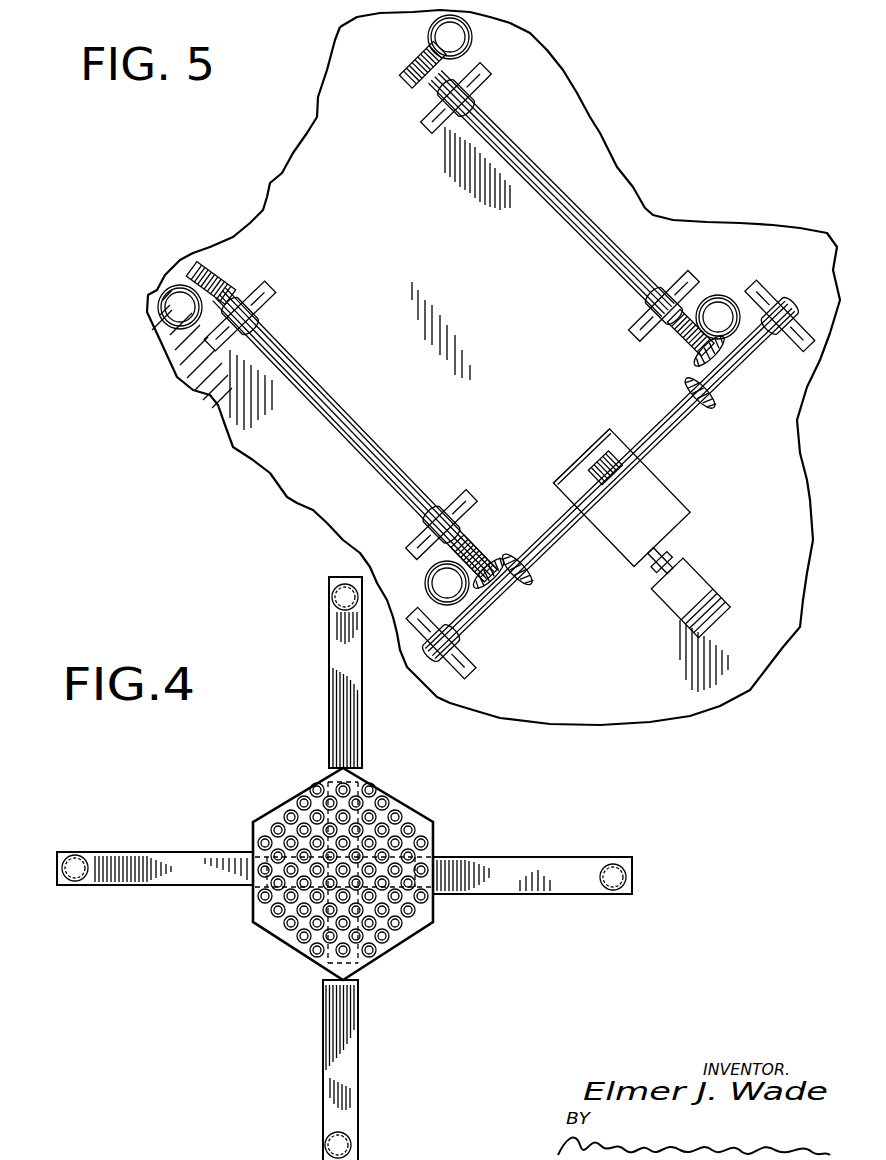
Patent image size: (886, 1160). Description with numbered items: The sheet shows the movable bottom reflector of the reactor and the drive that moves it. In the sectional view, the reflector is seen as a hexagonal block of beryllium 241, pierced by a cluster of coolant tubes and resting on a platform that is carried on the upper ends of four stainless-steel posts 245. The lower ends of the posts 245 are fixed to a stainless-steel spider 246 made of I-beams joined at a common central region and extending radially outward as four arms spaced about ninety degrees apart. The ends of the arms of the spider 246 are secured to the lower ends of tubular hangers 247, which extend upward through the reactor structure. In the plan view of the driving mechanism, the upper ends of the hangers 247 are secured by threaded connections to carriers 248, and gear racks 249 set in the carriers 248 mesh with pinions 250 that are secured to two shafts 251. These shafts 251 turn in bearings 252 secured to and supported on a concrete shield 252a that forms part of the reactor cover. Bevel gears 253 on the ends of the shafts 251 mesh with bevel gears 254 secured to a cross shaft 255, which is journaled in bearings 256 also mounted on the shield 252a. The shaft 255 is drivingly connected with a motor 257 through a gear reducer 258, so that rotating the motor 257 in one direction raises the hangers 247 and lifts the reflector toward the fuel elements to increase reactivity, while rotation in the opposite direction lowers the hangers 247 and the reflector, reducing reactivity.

In FIG. 4, the block of beryllium 241 is at (410, 938).
In FIG. 4, the posts 245 is at (352, 772).
In FIG. 4, the spider 246 is at (455, 866).
In FIG. 4, the tubular hangers 247 is at (335, 600).
In FIG. 5, the carriers 248 is at (462, 48).
In FIG. 5, the gear racks 249 is at (434, 36).
In FIG. 5, the pinions 250 is at (412, 72).
In FIG. 5, the shafts 251 is at (548, 188).
In FIG. 5, the bearings 252 is at (445, 128).
In FIG. 5, the concrete shield 252a is at (272, 205).
In FIG. 5, the bevel gears 253 is at (712, 356).
In FIG. 5, the bevel gears 254 is at (710, 400).
In FIG. 5, the shaft 255 is at (668, 418).
In FIG. 5, the bearings 256 is at (780, 298).
In FIG. 5, the motor 257 is at (695, 615).
In FIG. 5, the gear reducer 258 is at (668, 524).